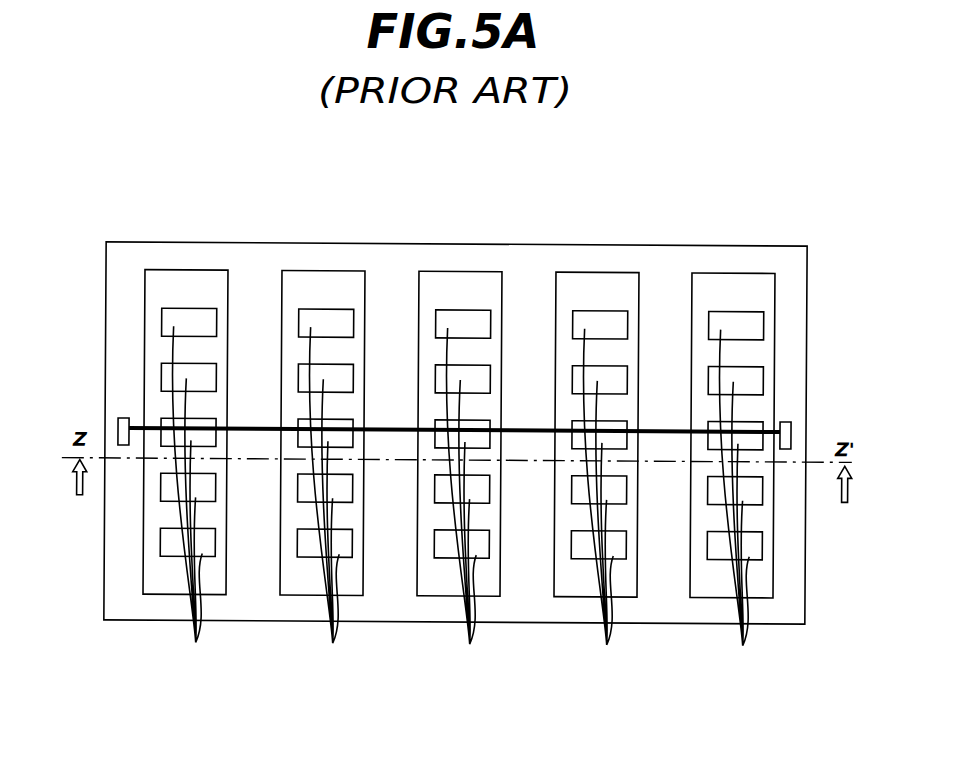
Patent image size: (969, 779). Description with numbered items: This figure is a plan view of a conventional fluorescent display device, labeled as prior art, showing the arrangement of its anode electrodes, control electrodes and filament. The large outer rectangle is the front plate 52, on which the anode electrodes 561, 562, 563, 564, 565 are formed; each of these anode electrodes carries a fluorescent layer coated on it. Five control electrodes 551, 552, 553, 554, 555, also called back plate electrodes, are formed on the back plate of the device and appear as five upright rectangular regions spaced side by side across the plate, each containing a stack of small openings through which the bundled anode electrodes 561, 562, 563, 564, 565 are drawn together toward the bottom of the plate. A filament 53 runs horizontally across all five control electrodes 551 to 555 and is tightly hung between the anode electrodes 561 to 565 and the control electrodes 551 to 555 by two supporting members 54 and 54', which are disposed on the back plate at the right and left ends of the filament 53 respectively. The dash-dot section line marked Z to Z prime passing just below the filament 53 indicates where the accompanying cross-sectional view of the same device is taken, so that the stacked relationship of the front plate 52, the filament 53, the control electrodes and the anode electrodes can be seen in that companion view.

The front plate 52 is at (765, 262).
The filament 53 is at (765, 438).
The supporting member 54 is at (817, 424).
The supporting member 54' is at (86, 415).
The control electrode 551 is at (187, 272).
The control electrode 552 is at (323, 272).
The control electrode 553 is at (460, 273).
The control electrode 554 is at (597, 273).
The control electrode 555 is at (733, 272).
The anode electrode 561 is at (193, 499).
The anode electrode 562 is at (330, 500).
The anode electrode 563 is at (468, 501).
The anode electrode 564 is at (604, 502).
The anode electrode 565 is at (740, 503).